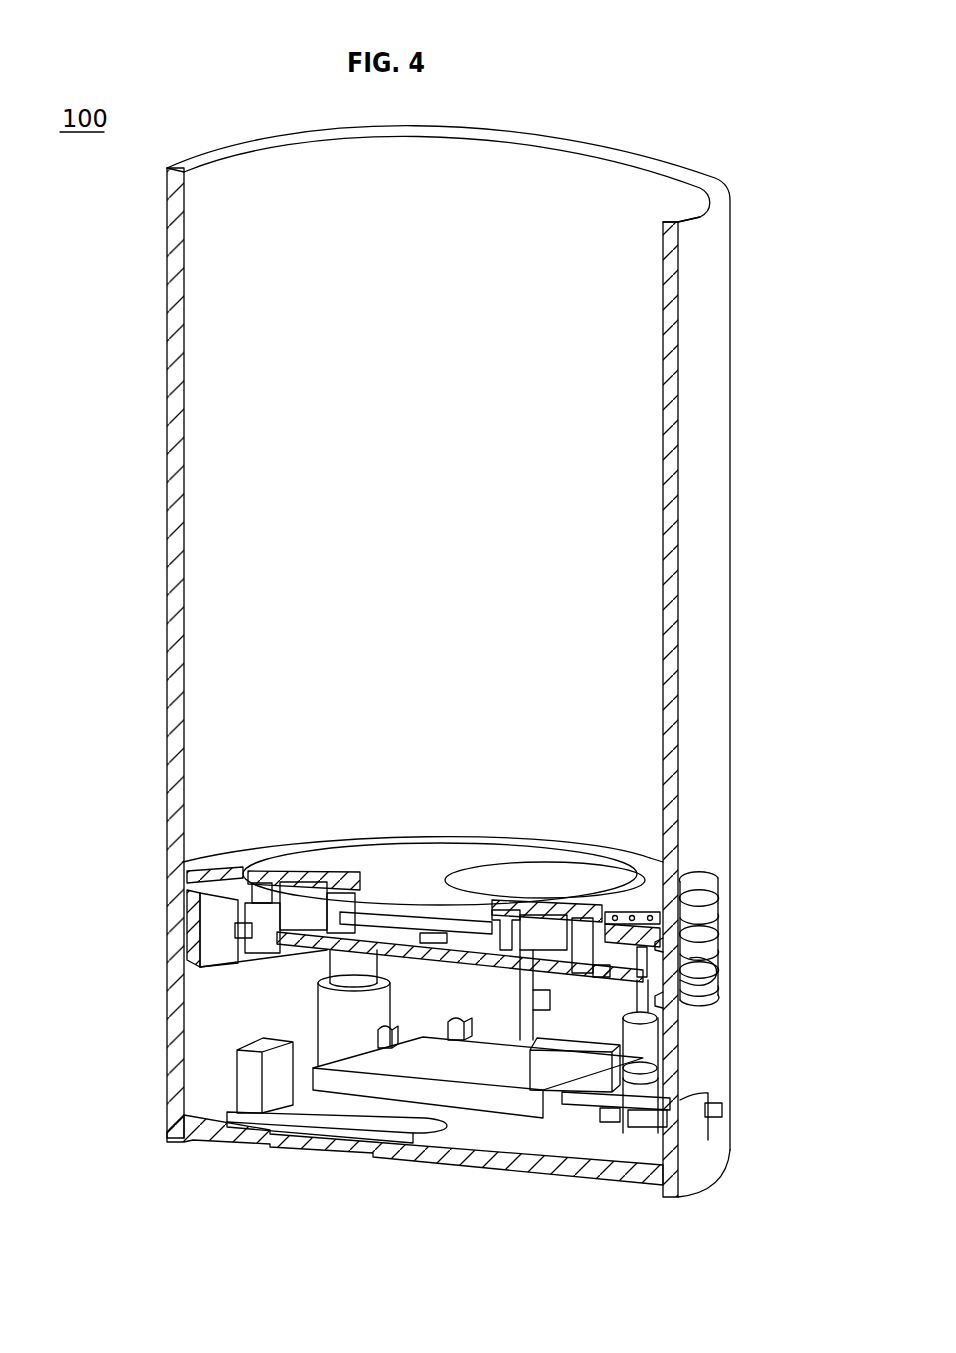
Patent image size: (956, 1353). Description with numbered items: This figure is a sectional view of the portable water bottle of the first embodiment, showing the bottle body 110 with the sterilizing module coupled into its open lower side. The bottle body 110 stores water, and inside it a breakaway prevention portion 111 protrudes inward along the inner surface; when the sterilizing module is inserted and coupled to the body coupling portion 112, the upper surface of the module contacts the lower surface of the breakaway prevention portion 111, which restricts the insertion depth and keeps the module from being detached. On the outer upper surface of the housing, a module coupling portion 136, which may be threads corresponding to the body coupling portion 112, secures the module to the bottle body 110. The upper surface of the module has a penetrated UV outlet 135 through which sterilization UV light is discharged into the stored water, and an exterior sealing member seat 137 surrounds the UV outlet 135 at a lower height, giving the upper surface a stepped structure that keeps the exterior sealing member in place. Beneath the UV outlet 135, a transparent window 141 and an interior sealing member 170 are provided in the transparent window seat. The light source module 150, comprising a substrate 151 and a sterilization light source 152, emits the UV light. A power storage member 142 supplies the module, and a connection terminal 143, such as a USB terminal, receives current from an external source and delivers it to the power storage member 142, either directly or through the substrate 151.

The bottle body 110 is at (718, 392).
The breakaway prevention portion 111 is at (693, 878).
The body coupling portion 112 is at (665, 968).
The UV outlet 135 is at (443, 880).
The module coupling portion 136 is at (672, 1000).
The exterior sealing member seat 137 is at (672, 945).
The transparent window 141 is at (461, 927).
The power storage member 142 is at (478, 1100).
The connection terminal 143 is at (655, 1115).
The light source module 150 is at (365, 782).
The substrate 151 is at (348, 888).
The sterilization light source 152 is at (381, 890).
The interior sealing member 170 is at (508, 907).